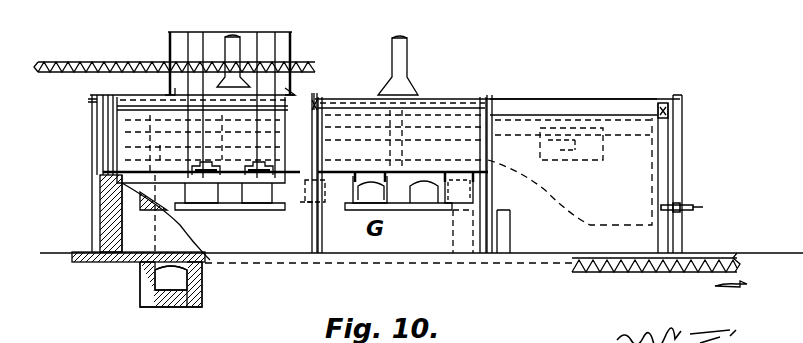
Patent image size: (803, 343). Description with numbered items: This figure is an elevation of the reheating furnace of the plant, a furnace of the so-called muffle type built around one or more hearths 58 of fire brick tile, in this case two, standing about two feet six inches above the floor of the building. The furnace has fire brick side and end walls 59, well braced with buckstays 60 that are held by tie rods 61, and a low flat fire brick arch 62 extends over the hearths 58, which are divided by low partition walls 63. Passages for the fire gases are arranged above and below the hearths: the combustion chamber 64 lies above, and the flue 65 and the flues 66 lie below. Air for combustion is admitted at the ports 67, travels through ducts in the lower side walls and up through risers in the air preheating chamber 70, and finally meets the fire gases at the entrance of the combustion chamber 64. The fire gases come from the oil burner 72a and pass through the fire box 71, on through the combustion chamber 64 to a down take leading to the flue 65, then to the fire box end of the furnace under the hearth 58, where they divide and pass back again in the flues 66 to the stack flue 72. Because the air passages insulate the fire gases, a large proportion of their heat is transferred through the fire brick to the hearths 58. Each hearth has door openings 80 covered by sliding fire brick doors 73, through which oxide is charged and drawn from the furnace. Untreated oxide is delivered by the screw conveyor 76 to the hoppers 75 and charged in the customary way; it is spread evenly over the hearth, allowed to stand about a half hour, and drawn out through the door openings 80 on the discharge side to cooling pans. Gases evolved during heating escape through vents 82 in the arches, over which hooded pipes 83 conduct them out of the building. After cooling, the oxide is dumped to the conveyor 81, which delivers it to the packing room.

The hearth 58 is at (324, 205).
The side and end walls 59 is at (100, 203).
The buckstays 60 is at (111, 95).
The tie rods 61 is at (592, 100).
The fire brick arch 62 is at (355, 161).
The partition walls 63 is at (322, 187).
The combustion chamber 64 is at (474, 175).
The flue 65 is at (169, 253).
The flues 66 is at (462, 240).
The ports 67 is at (511, 237).
The air preheating chamber 70 is at (466, 126).
The fire box 71 is at (570, 171).
The stack flue 72 is at (138, 279).
The oil burner 72a is at (678, 203).
The sliding fire brick doors 73 is at (329, 189).
The hoppers 75 is at (282, 158).
The screw conveyor 76 is at (152, 56).
The door openings 80 is at (424, 192).
The conveyor 81 is at (707, 257).
The vents 82 is at (226, 159).
The hooded pipes 83 is at (237, 41).